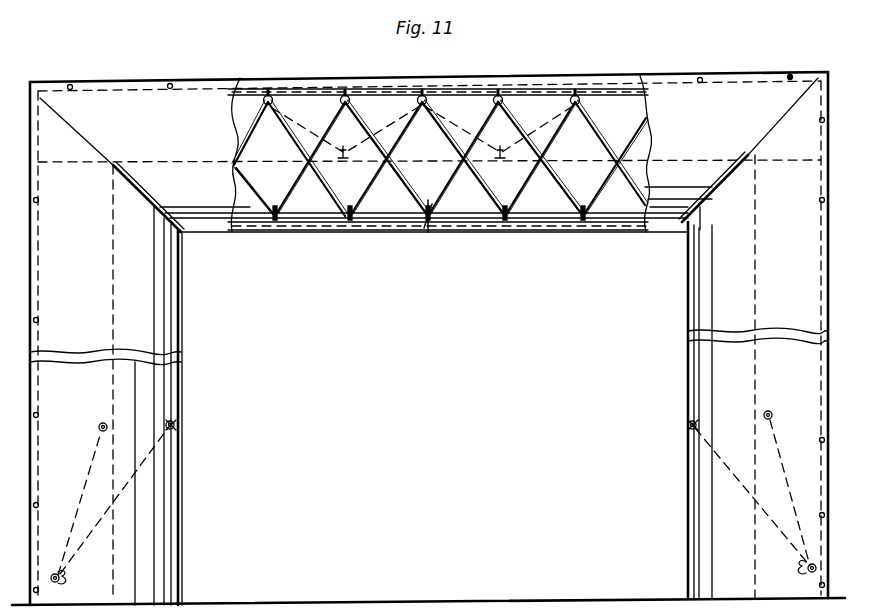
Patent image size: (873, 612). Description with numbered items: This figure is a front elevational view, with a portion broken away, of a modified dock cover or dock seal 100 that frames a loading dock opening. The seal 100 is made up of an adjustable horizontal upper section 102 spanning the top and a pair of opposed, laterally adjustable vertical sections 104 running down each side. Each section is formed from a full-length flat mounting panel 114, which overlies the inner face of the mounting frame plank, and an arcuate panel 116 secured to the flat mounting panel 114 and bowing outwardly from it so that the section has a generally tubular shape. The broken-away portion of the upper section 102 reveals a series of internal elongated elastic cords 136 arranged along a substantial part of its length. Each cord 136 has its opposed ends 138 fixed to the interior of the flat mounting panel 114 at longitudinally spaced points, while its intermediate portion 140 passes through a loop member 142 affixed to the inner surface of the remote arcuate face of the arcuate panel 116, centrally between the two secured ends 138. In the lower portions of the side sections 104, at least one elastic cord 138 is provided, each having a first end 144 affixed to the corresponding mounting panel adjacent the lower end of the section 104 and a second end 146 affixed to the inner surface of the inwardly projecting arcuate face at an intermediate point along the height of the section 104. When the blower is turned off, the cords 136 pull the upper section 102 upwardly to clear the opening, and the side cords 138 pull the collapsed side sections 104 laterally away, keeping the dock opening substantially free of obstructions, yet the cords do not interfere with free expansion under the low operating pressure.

The dock seal 100 is at (690, 72).
The horizontal upper section 102 is at (395, 234).
The vertical section 104 is at (186, 325).
The flat mounting panel 114 is at (374, 88).
The arcuate panel 116 is at (517, 231).
The elastic cord 136 is at (402, 178).
The elastic cord 138 is at (341, 97).
The intermediate portion 140 is at (438, 222).
The loop member 142 is at (430, 220).
The first end 144 is at (63, 582).
The second end 146 is at (174, 423).